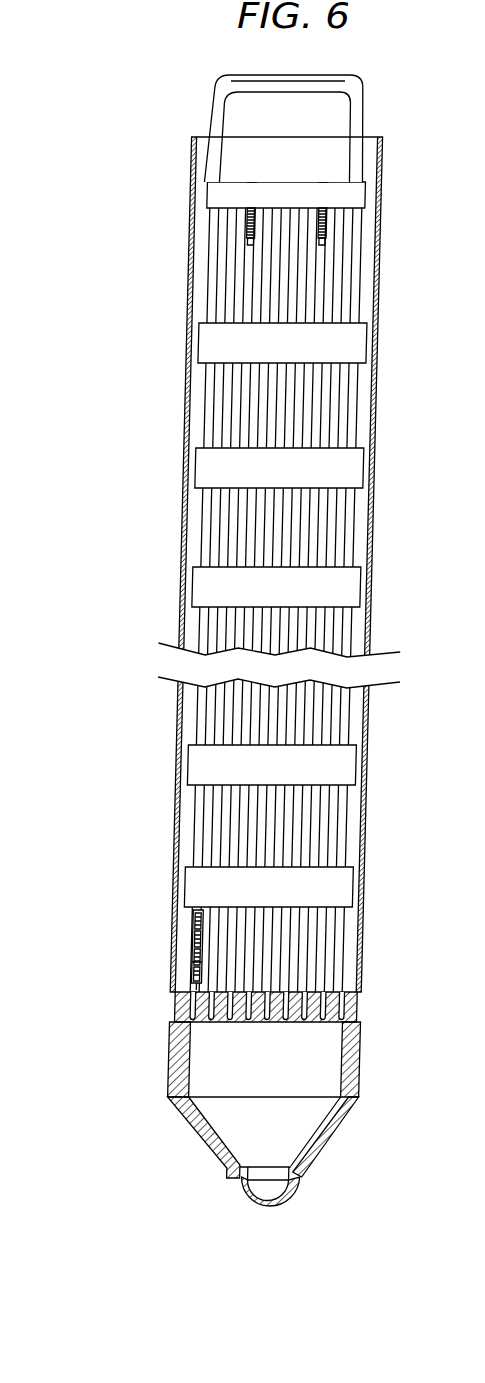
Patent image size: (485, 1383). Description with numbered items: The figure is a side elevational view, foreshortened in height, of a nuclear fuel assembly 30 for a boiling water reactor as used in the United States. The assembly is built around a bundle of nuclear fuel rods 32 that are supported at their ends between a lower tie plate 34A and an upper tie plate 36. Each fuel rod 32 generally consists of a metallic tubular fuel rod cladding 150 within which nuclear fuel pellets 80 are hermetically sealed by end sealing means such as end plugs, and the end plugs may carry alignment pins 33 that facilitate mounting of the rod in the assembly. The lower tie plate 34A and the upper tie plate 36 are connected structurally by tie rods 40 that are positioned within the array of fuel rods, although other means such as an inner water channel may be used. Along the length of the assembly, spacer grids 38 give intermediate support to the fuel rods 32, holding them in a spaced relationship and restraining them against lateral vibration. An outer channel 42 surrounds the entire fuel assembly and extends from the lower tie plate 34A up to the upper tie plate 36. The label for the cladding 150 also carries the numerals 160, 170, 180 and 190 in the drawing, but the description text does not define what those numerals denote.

The nuclear fuel assembly 30 is at (148, 553).
The nuclear fuel rods 32 is at (208, 407).
The alignment pins 33 is at (173, 1052).
The lower tie plate 34A is at (360, 1084).
The upper tie plate 36 is at (212, 193).
The spacer grids 38 is at (205, 342).
The tie rods 40 is at (246, 277).
The outer channel 42 is at (177, 822).
The nuclear fuel pellets 80 is at (197, 960).
The metallic tubular fuel rod cladding 150 is at (198, 912).
The sensor 160 is at (129, 922).
The sensor 170 is at (150, 927).
The sensor 180 is at (132, 949).
The sensor 190 is at (154, 957).